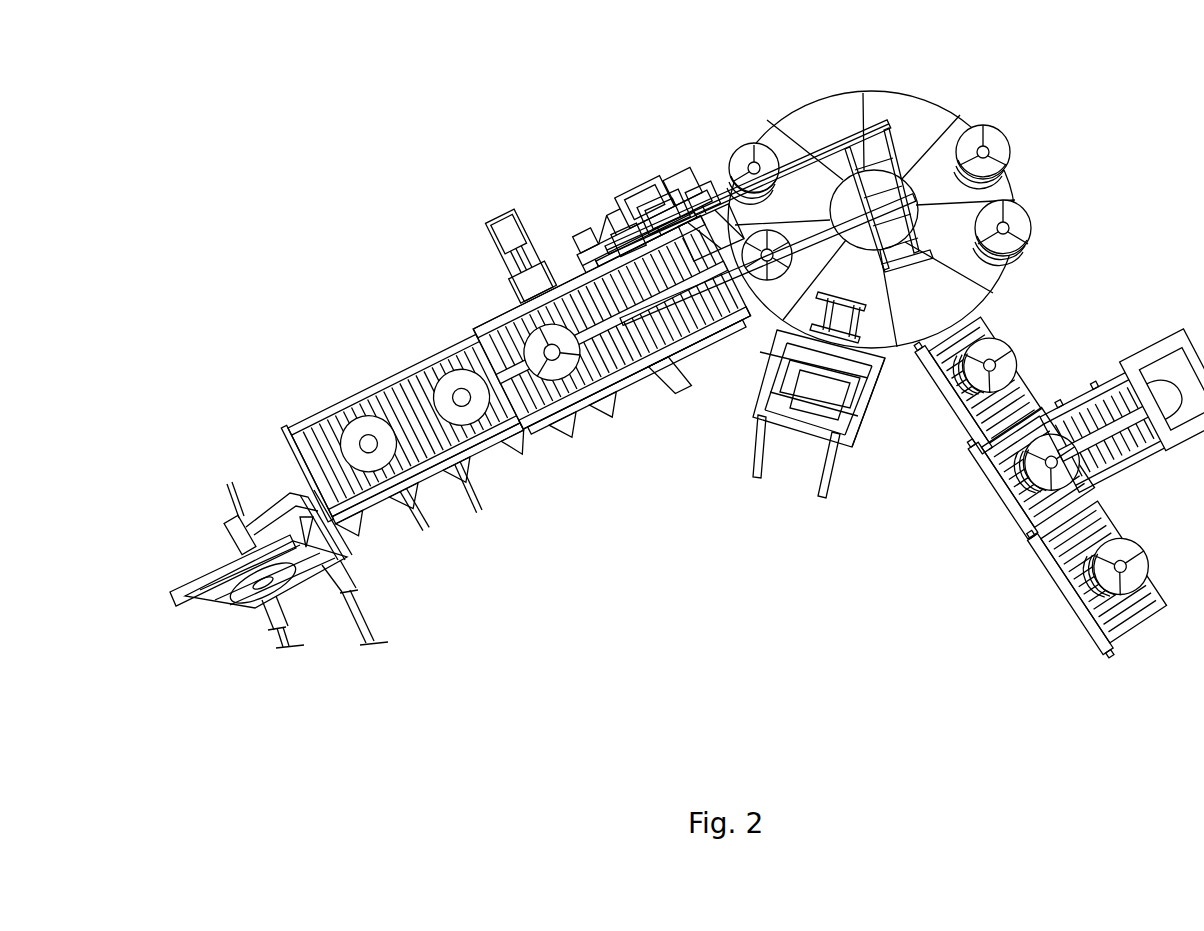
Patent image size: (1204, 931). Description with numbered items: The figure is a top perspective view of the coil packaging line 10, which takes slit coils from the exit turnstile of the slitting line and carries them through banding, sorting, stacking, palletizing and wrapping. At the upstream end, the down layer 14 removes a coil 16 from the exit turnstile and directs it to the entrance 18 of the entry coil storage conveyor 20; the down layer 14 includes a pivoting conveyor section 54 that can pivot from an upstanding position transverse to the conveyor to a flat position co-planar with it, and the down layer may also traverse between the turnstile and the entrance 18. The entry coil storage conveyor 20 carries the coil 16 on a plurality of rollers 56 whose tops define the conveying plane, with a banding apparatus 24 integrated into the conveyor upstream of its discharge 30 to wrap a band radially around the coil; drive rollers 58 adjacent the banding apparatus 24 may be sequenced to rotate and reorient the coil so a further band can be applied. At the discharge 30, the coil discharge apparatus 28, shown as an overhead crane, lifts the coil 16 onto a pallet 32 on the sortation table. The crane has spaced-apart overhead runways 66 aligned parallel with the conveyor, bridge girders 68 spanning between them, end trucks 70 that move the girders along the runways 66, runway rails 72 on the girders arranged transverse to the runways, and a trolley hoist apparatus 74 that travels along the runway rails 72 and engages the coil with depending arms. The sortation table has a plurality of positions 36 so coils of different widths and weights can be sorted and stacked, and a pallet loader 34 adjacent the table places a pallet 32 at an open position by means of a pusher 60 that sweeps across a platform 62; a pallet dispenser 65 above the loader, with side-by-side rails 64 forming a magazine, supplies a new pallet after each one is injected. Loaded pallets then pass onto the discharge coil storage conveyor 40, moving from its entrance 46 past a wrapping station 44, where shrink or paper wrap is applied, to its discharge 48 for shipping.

The coil packaging line 10 is at (240, 129).
The down layer 14 is at (237, 530).
The coil 16 is at (370, 423).
The entrance 18 is at (295, 453).
The entry coil storage conveyor 20 is at (452, 455).
The banding apparatus 24 is at (505, 225).
The coil discharge apparatus 28 is at (582, 265).
The discharge 30 is at (742, 228).
The pallet 32 is at (873, 362).
The pallet loader 34 is at (758, 420).
The positions 36 is at (1020, 232).
The discharge coil storage conveyor 40 is at (1000, 487).
The wrapping station 44 is at (1122, 412).
The entrance 46 is at (980, 327).
The discharge 48 is at (1135, 623).
The pivoting conveyor section 54 is at (328, 595).
The rollers 56 is at (401, 498).
The drive rollers 58 is at (548, 410).
The pusher 60 is at (810, 427).
The platform 62 is at (818, 360).
The rails 64 is at (790, 388).
The pallet dispenser 65 is at (858, 424).
The overhead runways 66 is at (810, 165).
The bridge girders 68 is at (680, 200).
The end truck 70 is at (627, 215).
The runway rails 72 is at (643, 210).
The trolley hoist apparatus 74 is at (668, 205).